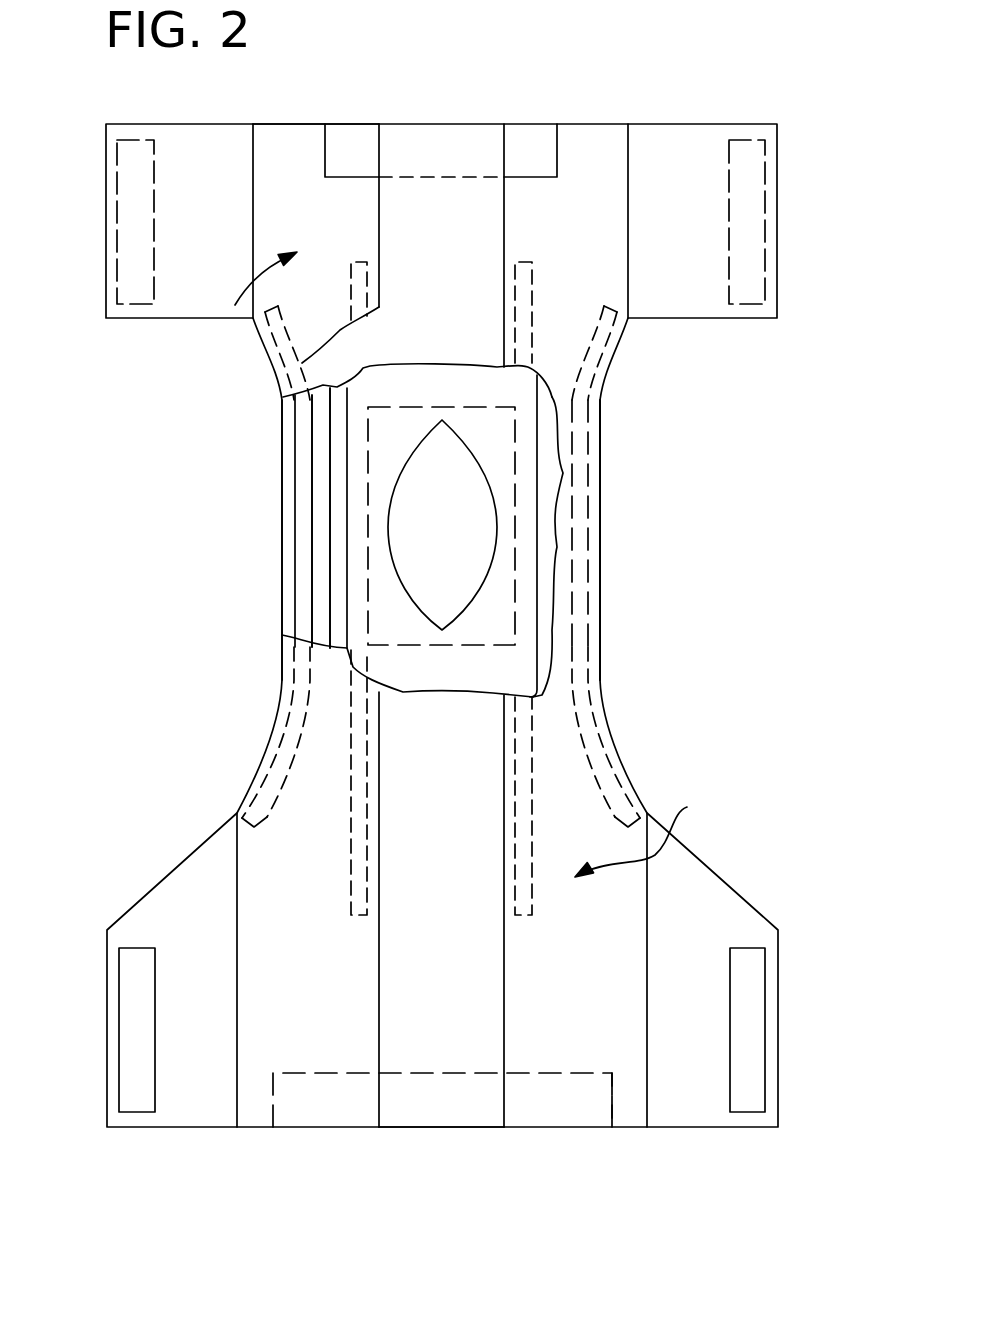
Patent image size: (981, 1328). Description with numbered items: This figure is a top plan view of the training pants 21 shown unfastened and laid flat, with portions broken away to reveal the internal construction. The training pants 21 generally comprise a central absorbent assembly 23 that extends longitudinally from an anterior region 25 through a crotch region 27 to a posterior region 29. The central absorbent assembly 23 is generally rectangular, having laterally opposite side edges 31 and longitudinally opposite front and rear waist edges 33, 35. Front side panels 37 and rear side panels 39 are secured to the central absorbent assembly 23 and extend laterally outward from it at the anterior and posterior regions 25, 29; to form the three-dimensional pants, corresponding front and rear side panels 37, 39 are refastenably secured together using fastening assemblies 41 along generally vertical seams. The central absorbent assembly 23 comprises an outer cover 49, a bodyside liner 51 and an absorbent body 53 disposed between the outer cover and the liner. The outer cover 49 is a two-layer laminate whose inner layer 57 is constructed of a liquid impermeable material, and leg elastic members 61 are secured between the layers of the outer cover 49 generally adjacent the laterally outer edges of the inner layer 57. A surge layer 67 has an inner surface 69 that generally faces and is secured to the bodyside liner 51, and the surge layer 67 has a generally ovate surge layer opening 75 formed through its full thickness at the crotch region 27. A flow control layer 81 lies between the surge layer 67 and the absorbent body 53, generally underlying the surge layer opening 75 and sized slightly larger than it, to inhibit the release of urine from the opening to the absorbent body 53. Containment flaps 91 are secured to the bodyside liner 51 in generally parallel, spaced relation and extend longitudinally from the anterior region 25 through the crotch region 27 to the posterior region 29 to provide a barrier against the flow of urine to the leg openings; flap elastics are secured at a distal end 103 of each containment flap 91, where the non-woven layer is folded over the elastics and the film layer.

The training pants 21 is at (612, 95).
The central absorbent assembly 23 is at (423, 1042).
The anterior region 25 is at (295, 142).
The crotch region 27 is at (600, 628).
The posterior region 29 is at (612, 1048).
The side edges 31 is at (282, 665).
The front waist edge 33 is at (440, 124).
The rear waist edge 35 is at (450, 1127).
The front side panels 37 is at (200, 124).
The rear side panels 39 is at (178, 1127).
The fastening assemblies 41 is at (117, 213).
The outer cover 49 is at (305, 533).
The bodyside liner 51 is at (473, 962).
The absorbent body 53 is at (330, 492).
The inner layer 57 is at (320, 570).
The leg elastic members 61 is at (310, 418).
The surge layer 67 is at (538, 475).
The inner surface 69 is at (525, 383).
The surge layer opening 75 is at (470, 603).
The flow control layer 81 is at (413, 648).
The containment flaps 91 is at (235, 305).
The distal end 103 is at (503, 840).